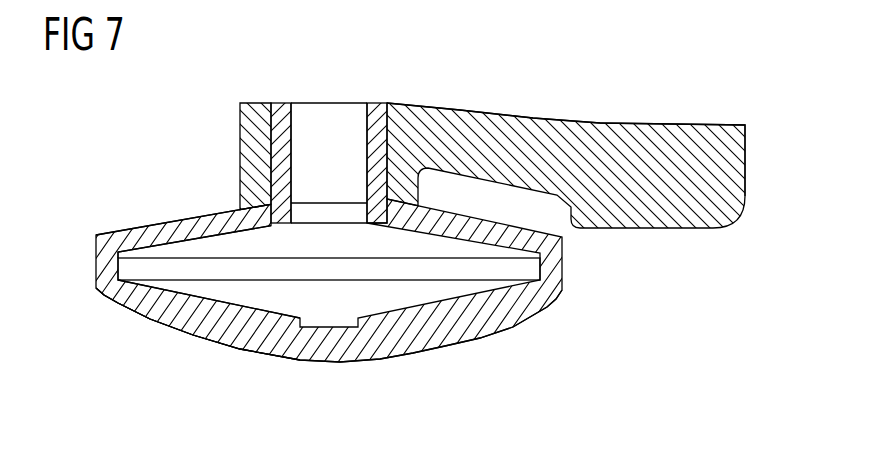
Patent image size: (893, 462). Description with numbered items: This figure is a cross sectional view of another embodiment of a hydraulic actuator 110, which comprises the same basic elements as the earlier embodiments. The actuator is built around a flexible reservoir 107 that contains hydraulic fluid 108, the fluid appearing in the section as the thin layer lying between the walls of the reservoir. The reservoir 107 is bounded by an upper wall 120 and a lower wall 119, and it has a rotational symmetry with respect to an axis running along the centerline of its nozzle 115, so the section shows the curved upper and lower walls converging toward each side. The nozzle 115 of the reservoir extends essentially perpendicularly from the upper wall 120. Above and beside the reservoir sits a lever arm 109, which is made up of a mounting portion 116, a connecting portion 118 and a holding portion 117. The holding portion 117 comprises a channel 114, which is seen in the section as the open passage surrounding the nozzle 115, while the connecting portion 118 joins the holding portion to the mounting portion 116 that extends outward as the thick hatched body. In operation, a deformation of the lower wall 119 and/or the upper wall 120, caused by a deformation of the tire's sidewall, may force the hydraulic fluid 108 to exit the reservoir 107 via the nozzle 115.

The flexible reservoir 107 is at (450, 323).
The hydraulic fluid 108 is at (482, 270).
The lever arm 109 is at (540, 115).
The hydraulic actuator 110 is at (128, 118).
The channel 114 is at (335, 115).
The nozzle 115 is at (280, 104).
The mounting portion 116 is at (732, 176).
The holding portion 117 is at (250, 130).
The connecting portion 118 is at (497, 118).
The lower wall 119 is at (193, 335).
The upper wall 120 is at (162, 222).